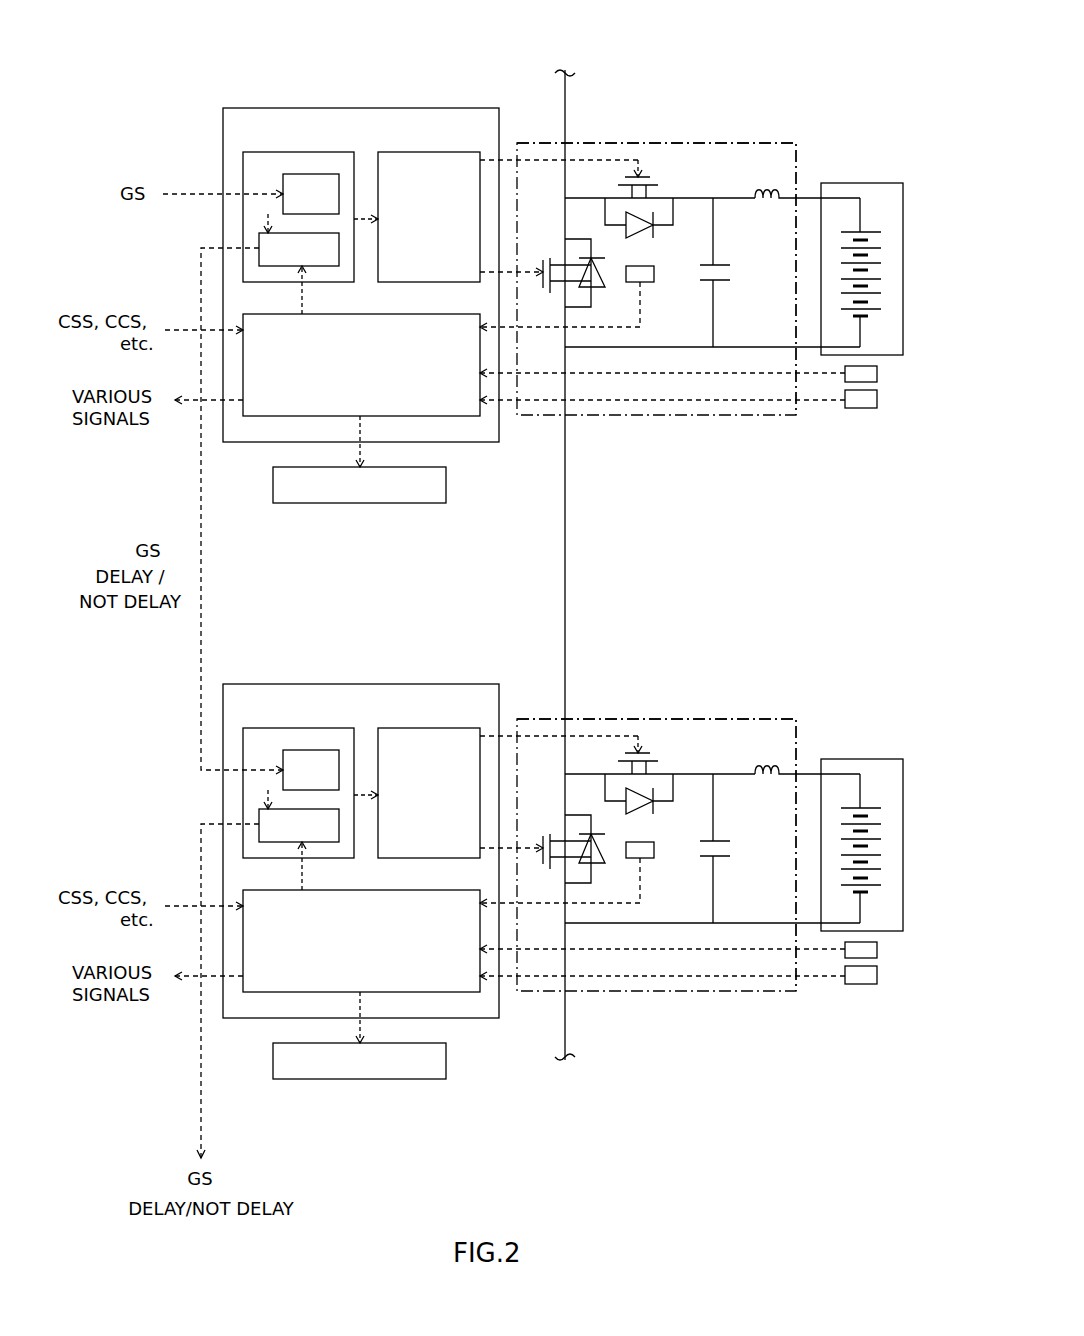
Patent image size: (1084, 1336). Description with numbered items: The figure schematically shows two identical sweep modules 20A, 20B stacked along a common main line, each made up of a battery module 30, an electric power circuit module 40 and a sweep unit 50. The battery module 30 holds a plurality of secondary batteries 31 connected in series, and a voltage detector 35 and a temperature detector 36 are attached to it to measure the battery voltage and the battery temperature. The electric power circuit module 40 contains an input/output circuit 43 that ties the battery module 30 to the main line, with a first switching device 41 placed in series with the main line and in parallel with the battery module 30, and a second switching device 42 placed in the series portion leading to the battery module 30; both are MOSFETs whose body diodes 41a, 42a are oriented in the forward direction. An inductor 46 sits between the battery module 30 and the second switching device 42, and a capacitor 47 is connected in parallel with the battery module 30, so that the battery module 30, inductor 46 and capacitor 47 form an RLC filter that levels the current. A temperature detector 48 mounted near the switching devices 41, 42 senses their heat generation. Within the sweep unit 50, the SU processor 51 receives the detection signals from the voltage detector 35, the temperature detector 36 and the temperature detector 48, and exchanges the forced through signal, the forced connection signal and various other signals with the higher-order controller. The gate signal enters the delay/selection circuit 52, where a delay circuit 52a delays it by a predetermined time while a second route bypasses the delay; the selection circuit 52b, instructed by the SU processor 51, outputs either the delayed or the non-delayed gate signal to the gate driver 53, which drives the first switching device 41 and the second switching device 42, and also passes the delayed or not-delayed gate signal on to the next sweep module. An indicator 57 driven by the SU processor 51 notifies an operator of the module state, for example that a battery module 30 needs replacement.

The sweep module 20A is at (773, 30).
The sweep module 20B is at (773, 606).
The battery module 30 is at (860, 183).
The battery 31 is at (881, 232).
The voltage detector 35 is at (877, 373).
The temperature detector 36 is at (877, 400).
The electric power circuit module 40 is at (715, 143).
The first switching device 41 is at (550, 257).
The first body diode 41a is at (592, 295).
The second switching device 42 is at (653, 172).
The second body diode 42a is at (642, 215).
The input/output circuit 43 is at (592, 198).
The inductor 46 is at (767, 186).
The capacitor 47 is at (723, 280).
The temperature detector 48 is at (650, 282).
The sweep unit 50 is at (360, 108).
The SU processor 51 is at (470, 416).
The delay/selection circuit 52 is at (297, 152).
The delay circuit 52a is at (312, 174).
The selection circuit 52b is at (270, 266).
The gate driver 53 is at (425, 152).
The indicator 57 is at (361, 503).